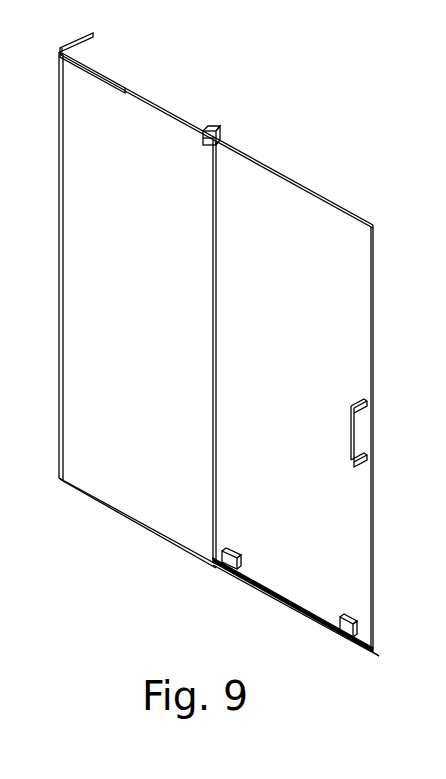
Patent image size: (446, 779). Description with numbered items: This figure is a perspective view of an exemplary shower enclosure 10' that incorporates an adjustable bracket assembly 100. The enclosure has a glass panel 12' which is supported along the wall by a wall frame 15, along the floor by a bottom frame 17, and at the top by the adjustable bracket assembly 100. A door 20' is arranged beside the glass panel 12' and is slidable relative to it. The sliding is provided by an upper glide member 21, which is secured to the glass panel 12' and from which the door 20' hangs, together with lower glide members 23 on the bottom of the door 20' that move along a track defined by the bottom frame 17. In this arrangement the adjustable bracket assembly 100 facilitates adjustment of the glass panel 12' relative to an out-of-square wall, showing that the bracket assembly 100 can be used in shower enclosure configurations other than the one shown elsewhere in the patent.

The shower enclosure 10' is at (285, 117).
The glass panel 12' is at (249, 158).
The wall frame 15 is at (62, 270).
The bottom frame 17 is at (180, 542).
The door 20' is at (319, 398).
The upper glide member 21 is at (218, 128).
The lower glide members 23 is at (237, 558).
The adjustable bracket assembly 100 is at (101, 56).